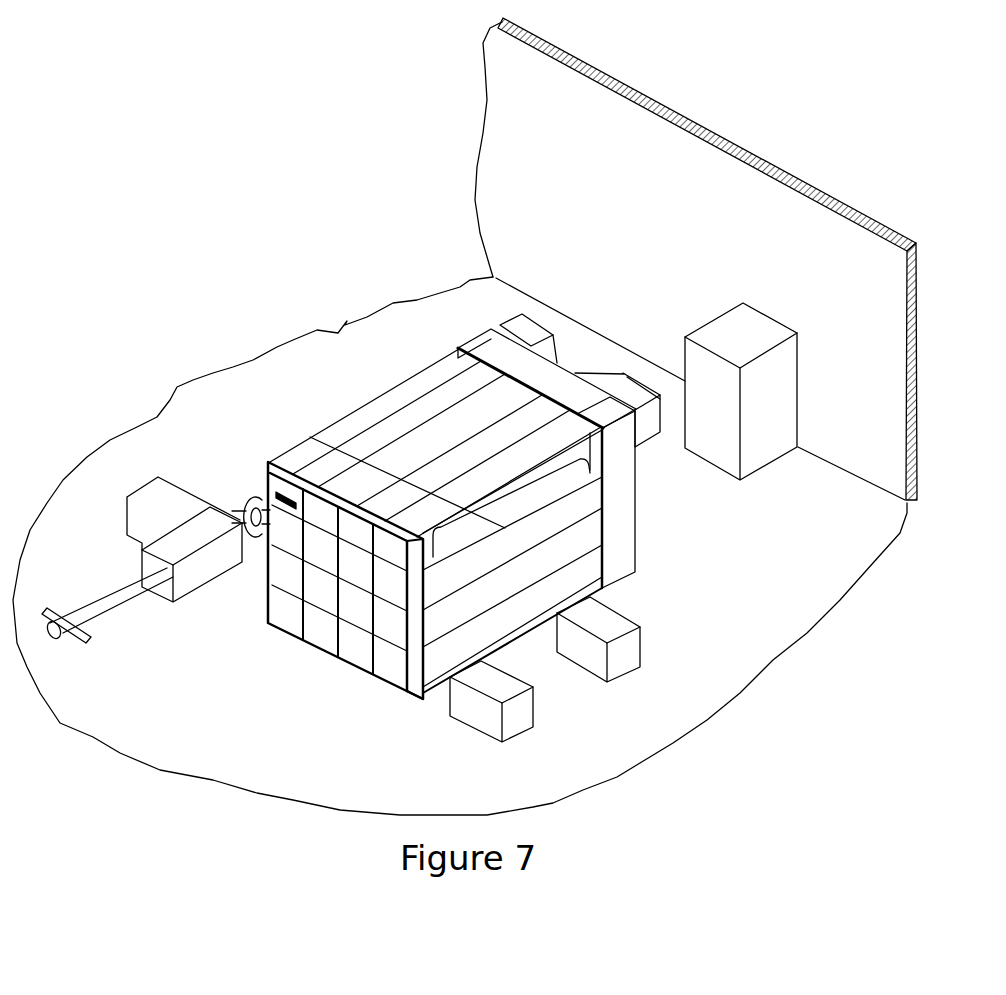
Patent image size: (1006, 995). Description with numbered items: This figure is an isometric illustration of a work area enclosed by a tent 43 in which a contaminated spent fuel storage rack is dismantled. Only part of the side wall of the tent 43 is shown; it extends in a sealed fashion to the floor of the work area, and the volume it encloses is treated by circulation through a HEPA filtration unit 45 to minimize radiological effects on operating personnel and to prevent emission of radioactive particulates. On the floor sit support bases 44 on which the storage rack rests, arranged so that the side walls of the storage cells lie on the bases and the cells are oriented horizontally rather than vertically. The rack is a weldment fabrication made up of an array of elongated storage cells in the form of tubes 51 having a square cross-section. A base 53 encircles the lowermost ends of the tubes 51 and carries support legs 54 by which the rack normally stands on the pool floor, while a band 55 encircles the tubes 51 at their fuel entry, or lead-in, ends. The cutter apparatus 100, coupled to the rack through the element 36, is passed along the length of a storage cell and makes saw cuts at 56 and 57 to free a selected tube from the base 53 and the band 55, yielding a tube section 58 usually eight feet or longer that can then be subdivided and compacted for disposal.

The tent 43 is at (543, 145).
The HEPA filtration unit 45 is at (745, 335).
The tubes 51 is at (520, 450).
The base 53 is at (620, 490).
The support legs 54 is at (521, 333).
The band 55 is at (415, 676).
The saw cut 56 is at (415, 516).
The saw cut 57 is at (572, 425).
The tube section 58 is at (510, 497).
The coupling 36 is at (283, 487).
The support bases 44 is at (520, 718).
The cutter apparatus 100 is at (195, 572).